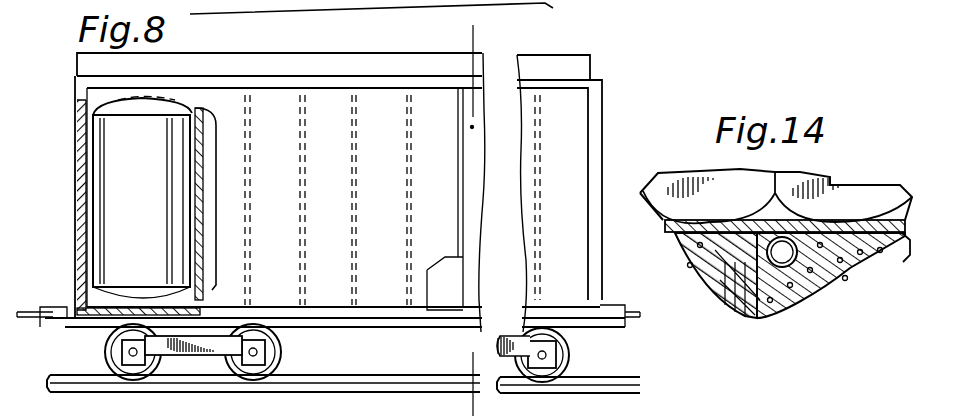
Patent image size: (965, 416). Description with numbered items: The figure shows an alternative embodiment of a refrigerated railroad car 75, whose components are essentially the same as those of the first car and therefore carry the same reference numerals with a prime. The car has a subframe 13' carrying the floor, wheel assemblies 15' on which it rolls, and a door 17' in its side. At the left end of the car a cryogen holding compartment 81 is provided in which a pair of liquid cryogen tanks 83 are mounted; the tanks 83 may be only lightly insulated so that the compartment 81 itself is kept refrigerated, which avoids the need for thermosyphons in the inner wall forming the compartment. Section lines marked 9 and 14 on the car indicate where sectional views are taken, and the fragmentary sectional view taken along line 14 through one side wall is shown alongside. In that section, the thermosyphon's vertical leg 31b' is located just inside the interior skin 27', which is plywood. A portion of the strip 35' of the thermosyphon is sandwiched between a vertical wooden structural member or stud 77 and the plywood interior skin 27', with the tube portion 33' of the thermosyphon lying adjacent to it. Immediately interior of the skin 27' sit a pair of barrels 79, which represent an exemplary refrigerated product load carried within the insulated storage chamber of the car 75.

In FIG. 8, the cryogen holding compartment 81 is at (97, 165).
In FIG. 8, the liquid cryogen tank 83 is at (157, 196).
In FIG. 8, the section line 14— 14 is at (278, 264).
In FIG. 8, the section line 9— 9 is at (461, 219).
In FIG. 8, the subframe 13' is at (38, 339).
In FIG. 8, the wheel assembly 15' is at (228, 352).
In FIG. 8, the door 17' is at (500, 192).
In FIG. 14, the railroad car 75 is at (624, 120).
In FIG. 14, the barrel 79 is at (696, 145).
In FIG. 14, the strip 35' is at (763, 250).
In FIG. 14, the vertical wooden structural member or stud 77 is at (740, 309).
In FIG. 14, the vertical leg of thermosyphon 31b' is at (814, 302).
In FIG. 14, the tube portion 33' is at (797, 284).
In FIG. 14, the interior skin 27' is at (888, 274).